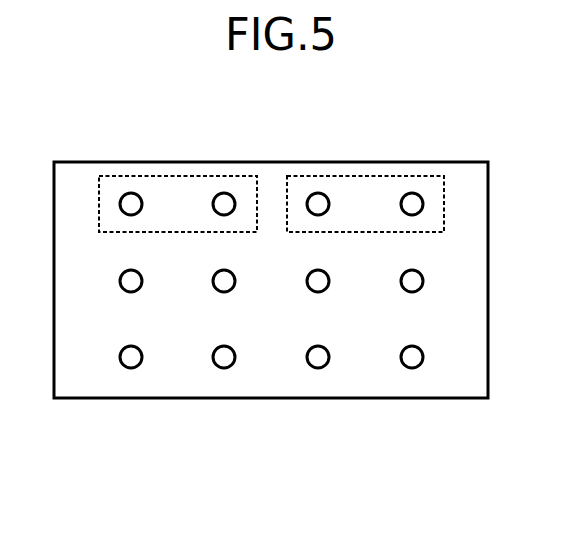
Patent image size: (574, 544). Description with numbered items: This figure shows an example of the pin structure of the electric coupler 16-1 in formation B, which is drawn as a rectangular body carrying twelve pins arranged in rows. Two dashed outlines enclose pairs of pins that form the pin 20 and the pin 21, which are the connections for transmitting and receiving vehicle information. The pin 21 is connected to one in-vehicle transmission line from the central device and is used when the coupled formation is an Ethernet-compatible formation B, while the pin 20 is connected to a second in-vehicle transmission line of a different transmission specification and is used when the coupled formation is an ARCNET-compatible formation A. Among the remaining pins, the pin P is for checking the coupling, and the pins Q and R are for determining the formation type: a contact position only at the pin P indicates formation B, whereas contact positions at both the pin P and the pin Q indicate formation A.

The electric coupler 16-1 is at (468, 161).
The pin 20 is at (177, 176).
The pin 21 is at (349, 176).
The pin P is at (213, 281).
The pin Q is at (306, 280).
The pin R is at (400, 280).